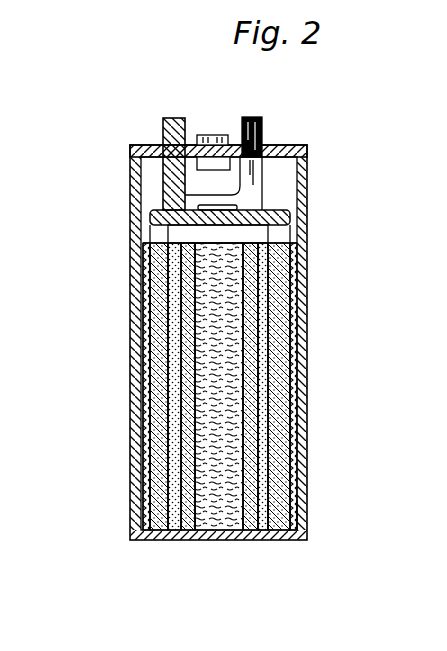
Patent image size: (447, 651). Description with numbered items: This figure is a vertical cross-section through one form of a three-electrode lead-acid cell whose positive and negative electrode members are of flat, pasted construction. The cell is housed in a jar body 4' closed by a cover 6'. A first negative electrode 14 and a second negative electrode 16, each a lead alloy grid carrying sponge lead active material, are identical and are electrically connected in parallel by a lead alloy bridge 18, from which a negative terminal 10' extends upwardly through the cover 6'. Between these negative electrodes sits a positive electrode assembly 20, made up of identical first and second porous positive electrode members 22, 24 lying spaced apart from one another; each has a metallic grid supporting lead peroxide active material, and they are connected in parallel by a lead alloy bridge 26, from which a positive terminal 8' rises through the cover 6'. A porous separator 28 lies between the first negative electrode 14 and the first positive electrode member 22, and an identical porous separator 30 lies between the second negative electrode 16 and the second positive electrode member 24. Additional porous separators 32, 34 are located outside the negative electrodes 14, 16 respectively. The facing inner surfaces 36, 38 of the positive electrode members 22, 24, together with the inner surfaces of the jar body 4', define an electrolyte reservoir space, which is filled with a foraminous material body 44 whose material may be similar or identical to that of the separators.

The jar body 4' is at (243, 342).
The cover 6' is at (234, 137).
The positive terminal 8' is at (271, 148).
The negative terminal 10' is at (146, 147).
The first negative electrode 14 is at (145, 540).
The second negative electrode 16 is at (295, 540).
The lead alloy bridge 18 is at (289, 214).
The positive electrode assembly 20 is at (247, 540).
The first positive electrode member 22 is at (146, 448).
The second positive electrode member 24 is at (292, 446).
The lead alloy bridge 26 is at (202, 198).
The porous separator 28 is at (165, 540).
The porous separator 30 is at (265, 540).
The additional porous separator 32 is at (142, 373).
The additional porous separator 34 is at (296, 376).
The inner surface 36 is at (198, 333).
The inner surface 38 is at (238, 334).
The foraminous material body 44 is at (285, 284).